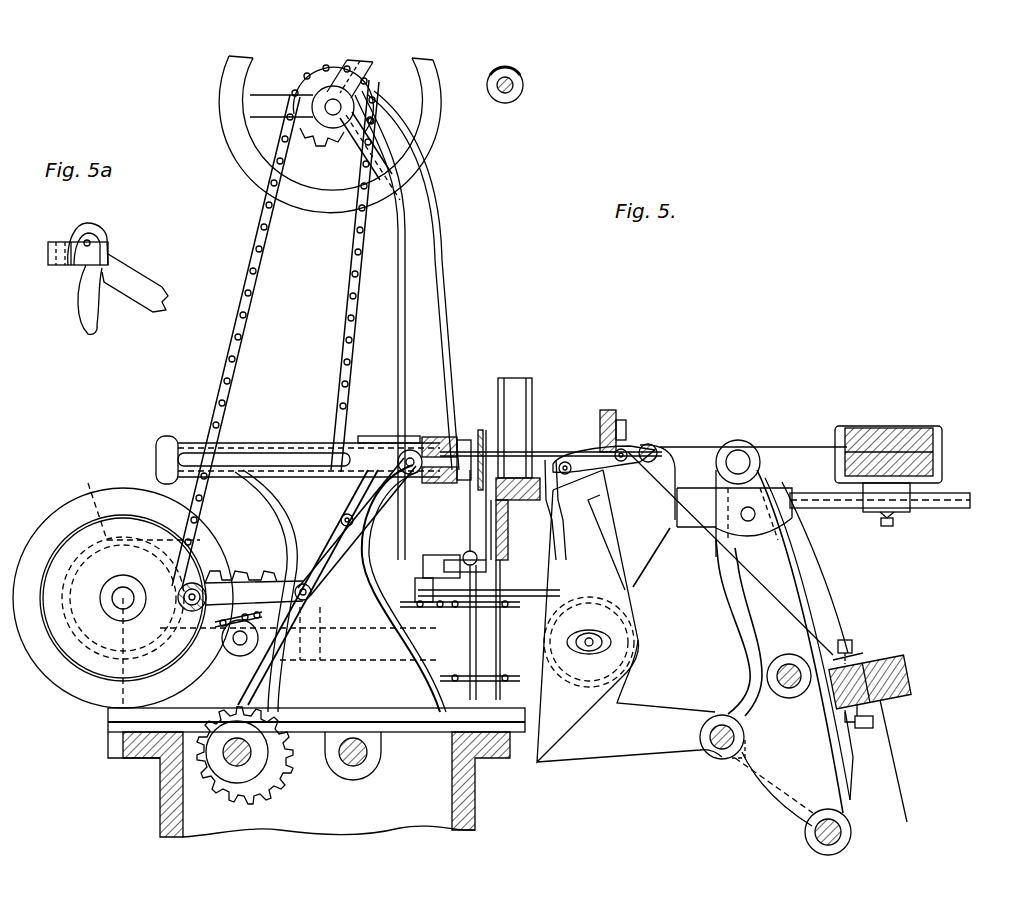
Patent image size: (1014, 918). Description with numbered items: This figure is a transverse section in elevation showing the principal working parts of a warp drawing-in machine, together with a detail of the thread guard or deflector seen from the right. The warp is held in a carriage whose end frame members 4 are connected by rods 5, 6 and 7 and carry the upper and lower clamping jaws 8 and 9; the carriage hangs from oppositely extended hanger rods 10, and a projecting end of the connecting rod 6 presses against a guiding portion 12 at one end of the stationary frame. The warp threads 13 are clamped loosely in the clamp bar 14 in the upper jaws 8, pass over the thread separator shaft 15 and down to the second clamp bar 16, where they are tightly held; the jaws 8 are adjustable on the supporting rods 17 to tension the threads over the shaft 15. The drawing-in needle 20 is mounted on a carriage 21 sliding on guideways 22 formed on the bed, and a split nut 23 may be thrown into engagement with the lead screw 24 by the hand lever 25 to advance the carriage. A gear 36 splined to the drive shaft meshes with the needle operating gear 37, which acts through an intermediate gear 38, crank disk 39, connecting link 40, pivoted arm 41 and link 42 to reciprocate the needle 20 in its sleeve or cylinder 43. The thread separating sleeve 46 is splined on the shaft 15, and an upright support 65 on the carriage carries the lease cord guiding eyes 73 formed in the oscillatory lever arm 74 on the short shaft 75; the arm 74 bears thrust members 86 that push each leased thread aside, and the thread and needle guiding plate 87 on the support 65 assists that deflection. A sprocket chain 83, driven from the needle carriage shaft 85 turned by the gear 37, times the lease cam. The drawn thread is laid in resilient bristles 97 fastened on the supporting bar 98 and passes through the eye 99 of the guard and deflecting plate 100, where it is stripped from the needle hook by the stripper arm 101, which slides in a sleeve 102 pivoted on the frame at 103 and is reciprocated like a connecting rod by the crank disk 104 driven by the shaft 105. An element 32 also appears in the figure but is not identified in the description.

In FIG. 5, the end frame members 4 is at (748, 622).
In FIG. 5, the rod 5 is at (795, 690).
In FIG. 5, the connecting rod 6 is at (712, 744).
In FIG. 5, the rod 7 is at (852, 830).
In FIG. 5, the upper clamping jaws 8 is at (938, 446).
In FIG. 5, the lower clamping jaws 9 is at (862, 652).
In FIG. 5, the hanger rods 10 is at (744, 458).
In FIG. 5, the guiding portion 12 is at (710, 752).
In FIG. 5, the warp threads 13 is at (815, 585).
In FIG. 5, the clamp bar 14 is at (888, 428).
In FIG. 5, the thread separator shaft 15 is at (688, 440).
In FIG. 5, the second clamp bar 16 is at (892, 663).
In FIG. 5, the supporting rods 17 is at (950, 495).
In FIG. 5A, the drawing-in needle 20 is at (92, 244).
In FIG. 5, the drawing-in needle 20 is at (520, 450).
In FIG. 5, the carriage 21 is at (108, 735).
In FIG. 5, the guideways 22 is at (140, 760).
In FIG. 5, the split nut 23 is at (375, 758).
In FIG. 5, the lead screw 24 is at (352, 766).
In FIG. 5, the hand lever 25 is at (237, 766).
In FIG. 5, the pin 32 is at (524, 86).
In FIG. 5, the gear 36 is at (268, 766).
In FIG. 5, the needle operating gear 37 is at (342, 588).
In FIG. 5, the intermediate gear 38 is at (139, 496).
In FIG. 5, the crank disk 39 is at (70, 665).
In FIG. 5, the connecting link 40 is at (245, 572).
In FIG. 5, the pivoted arm 41 is at (290, 622).
In FIG. 5, the link 42 is at (360, 482).
In FIG. 5, the sleeve or cylinder 43 is at (293, 442).
In FIG. 5, the sleeve 46 is at (680, 460).
In FIG. 5, the upright support 65 is at (612, 560).
In FIG. 5, the guiding eyes 73 is at (565, 462).
In FIG. 5, the oscillatory lever arm 74 is at (585, 478).
In FIG. 5, the short shaft 75 is at (608, 470).
In FIG. 5, the sprocket chain 83 is at (520, 606).
In FIG. 5, the needle carriage shaft 85 is at (238, 644).
In FIG. 5, the thrust members 86 is at (590, 445).
In FIG. 5, the thread and needle guiding plate 87 is at (543, 510).
In FIG. 5, the resilient bristles 97 is at (528, 410).
In FIG. 5, the supporting bar 98 is at (470, 492).
In FIG. 5A, the eye 99 is at (96, 236).
In FIG. 5A, the guard and deflecting plate 100 is at (62, 242).
In FIG. 5, the guard and deflecting plate 100 is at (478, 445).
In FIG. 5A, the stripper arm 101 is at (150, 292).
In FIG. 5, the stripper arm 101 is at (484, 517).
In FIG. 5, the sleeve 102 is at (466, 553).
In FIG. 5, the pivot 103 is at (423, 560).
In FIG. 5, the crank disk 104 is at (478, 640).
In FIG. 5, the shaft 105 is at (415, 582).